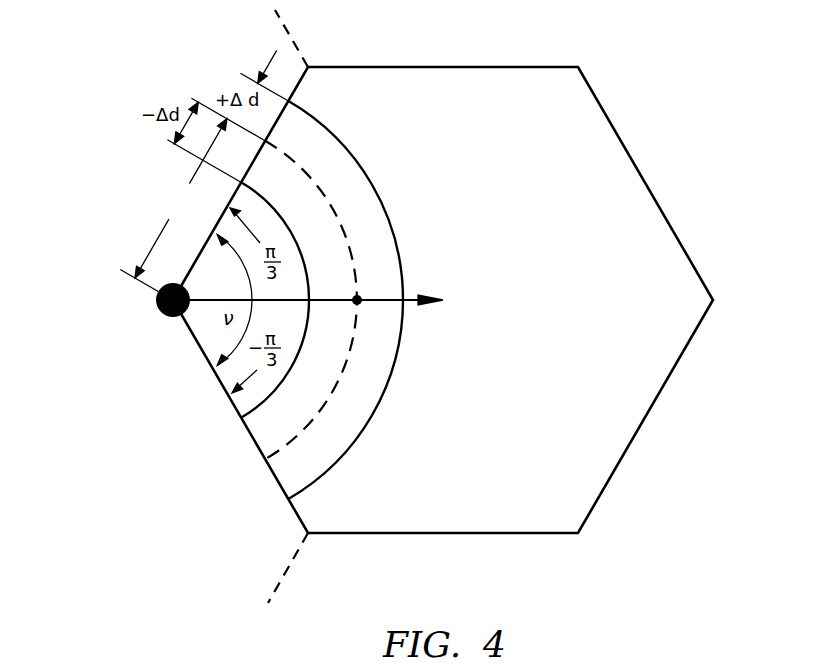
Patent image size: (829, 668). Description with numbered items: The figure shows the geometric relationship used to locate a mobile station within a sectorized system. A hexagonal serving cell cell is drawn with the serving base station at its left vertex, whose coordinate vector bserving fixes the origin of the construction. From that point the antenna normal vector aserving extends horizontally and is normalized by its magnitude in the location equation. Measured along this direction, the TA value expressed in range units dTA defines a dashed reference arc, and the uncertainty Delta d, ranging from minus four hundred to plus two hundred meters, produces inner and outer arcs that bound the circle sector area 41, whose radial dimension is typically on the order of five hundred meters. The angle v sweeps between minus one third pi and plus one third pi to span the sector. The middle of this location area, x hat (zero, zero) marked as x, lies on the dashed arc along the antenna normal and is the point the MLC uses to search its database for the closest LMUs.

The area 41 is at (333, 440).
The serving cell is at (557, 122).
The antenna normal vector of the serving base station aserving is at (412, 298).
The coordinate vector of the serving base station bserving is at (160, 308).
The middle of the MS location area x is at (357, 302).
The TA value expressed in range units dTA is at (204, 182).